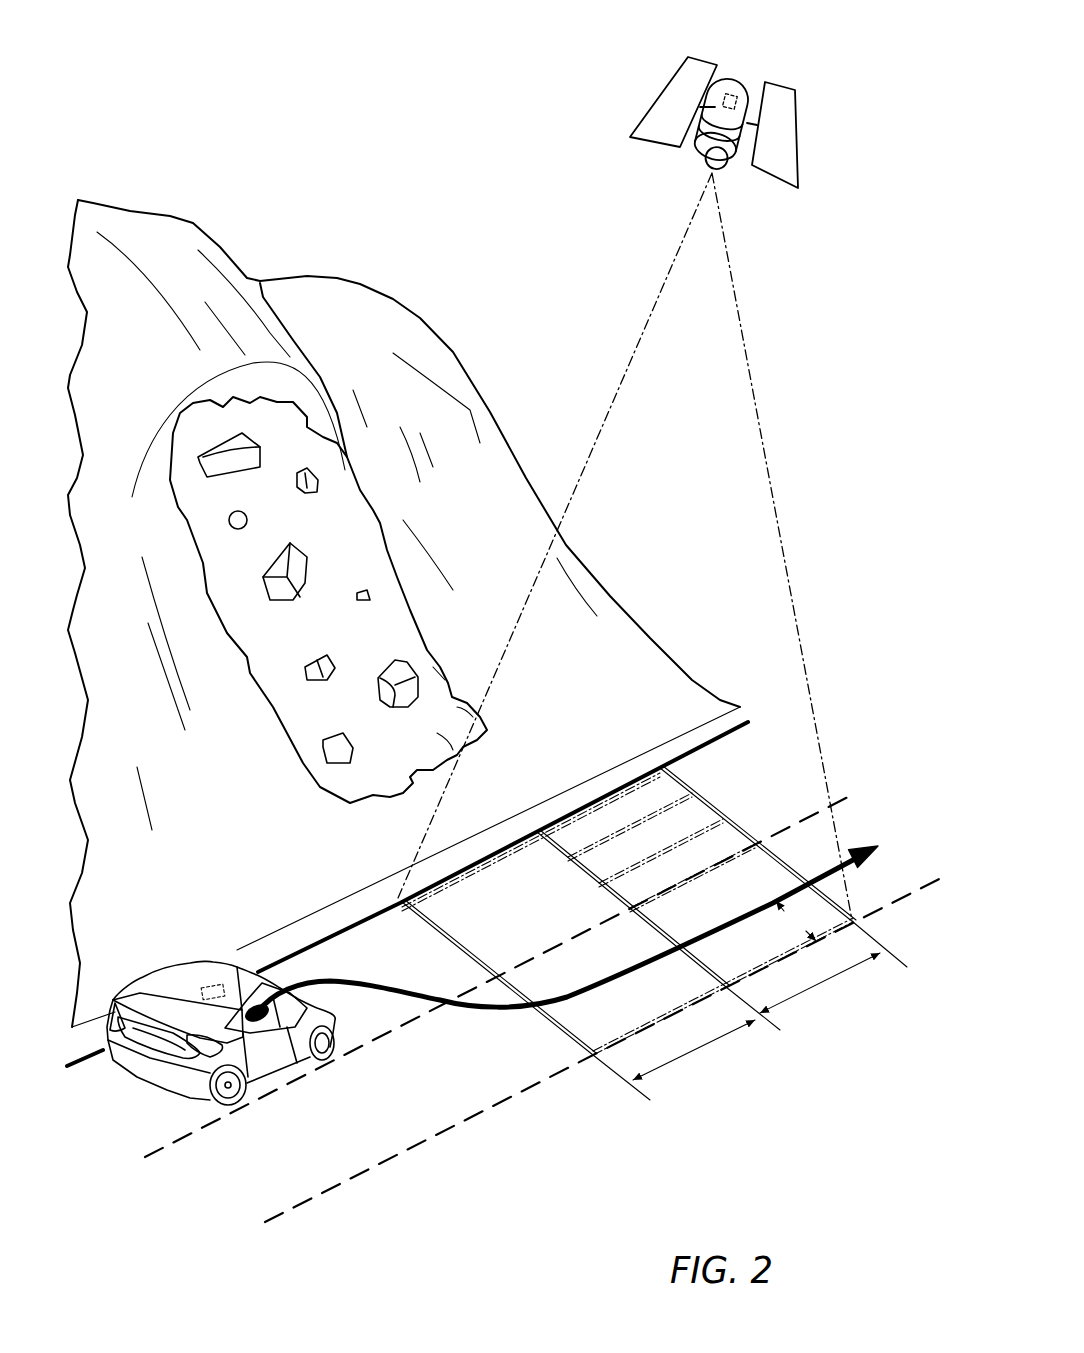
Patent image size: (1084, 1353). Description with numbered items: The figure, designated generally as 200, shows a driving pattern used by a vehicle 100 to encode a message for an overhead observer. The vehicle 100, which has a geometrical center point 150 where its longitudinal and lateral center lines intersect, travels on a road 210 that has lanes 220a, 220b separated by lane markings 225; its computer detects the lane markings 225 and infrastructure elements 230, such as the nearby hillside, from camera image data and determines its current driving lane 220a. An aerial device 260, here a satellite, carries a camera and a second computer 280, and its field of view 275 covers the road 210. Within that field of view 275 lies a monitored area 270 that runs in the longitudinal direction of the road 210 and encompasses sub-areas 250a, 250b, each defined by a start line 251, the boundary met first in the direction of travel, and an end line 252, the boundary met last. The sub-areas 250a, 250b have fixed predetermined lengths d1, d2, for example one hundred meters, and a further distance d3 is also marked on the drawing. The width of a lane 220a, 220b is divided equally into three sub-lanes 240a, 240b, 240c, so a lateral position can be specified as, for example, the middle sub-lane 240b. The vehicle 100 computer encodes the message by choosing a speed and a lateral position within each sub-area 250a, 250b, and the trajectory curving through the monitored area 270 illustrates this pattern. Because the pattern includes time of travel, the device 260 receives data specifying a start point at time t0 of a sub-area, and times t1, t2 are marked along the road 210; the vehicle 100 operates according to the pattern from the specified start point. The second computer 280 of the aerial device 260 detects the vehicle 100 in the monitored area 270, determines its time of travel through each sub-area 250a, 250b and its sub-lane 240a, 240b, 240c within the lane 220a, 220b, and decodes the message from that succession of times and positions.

The vehicle 100 is at (240, 960).
The geometrical center point 150 is at (257, 1013).
The environment / system 200 is at (316, 90).
The road 210 is at (513, 1138).
The driving lane 220a is at (133, 1119).
The lane 220b is at (415, 1109).
The lane markings 225 is at (72, 1068).
The infrastructure elements 230 is at (210, 443).
The sub-lane 240a is at (668, 793).
The sub-lane 240b is at (693, 817).
The sub-lane 240c is at (720, 833).
The sub-area 250a is at (520, 872).
The sub-area 250b is at (620, 815).
The start line 251 is at (637, 917).
The end line 252 is at (783, 863).
The aerial device 260 is at (737, 83).
The monitored area 270 is at (550, 1027).
The field of view 275 is at (757, 388).
The second computer 280 is at (738, 107).
The length of sub-area d1 is at (694, 1050).
The length of sub-area d2 is at (820, 983).
The lateral offset distance d3 is at (796, 921).
The start point time t0 is at (632, 1088).
The second time t1 is at (763, 1020).
The third time t2 is at (890, 957).